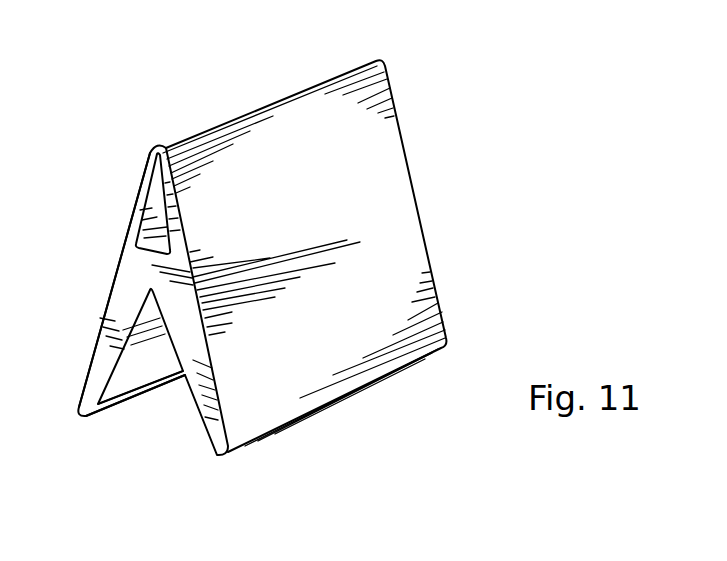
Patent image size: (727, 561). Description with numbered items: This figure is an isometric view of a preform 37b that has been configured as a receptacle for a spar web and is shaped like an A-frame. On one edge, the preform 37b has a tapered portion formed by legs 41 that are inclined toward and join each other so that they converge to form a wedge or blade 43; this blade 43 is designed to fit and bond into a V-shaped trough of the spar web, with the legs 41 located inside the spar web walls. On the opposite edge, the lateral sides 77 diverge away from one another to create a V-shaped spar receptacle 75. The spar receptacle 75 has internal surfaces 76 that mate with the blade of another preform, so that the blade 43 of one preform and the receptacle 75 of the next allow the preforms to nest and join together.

The preform 37b is at (299, 282).
The legs 41 is at (133, 219).
The wedge-shaped blade 43 is at (397, 93).
The spar receptacle 75 is at (157, 383).
The internal surfaces 76 is at (112, 392).
The lateral sides 77 is at (317, 383).